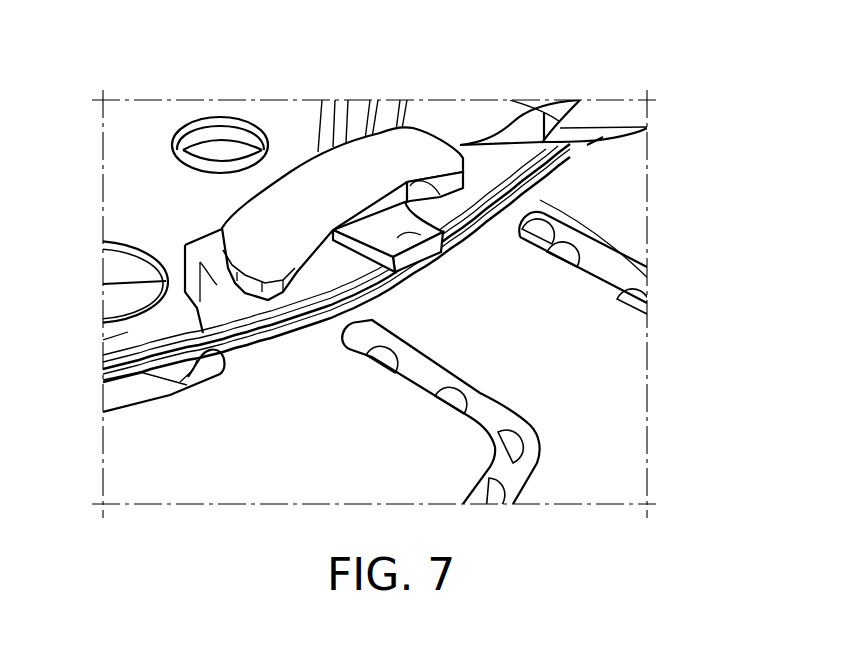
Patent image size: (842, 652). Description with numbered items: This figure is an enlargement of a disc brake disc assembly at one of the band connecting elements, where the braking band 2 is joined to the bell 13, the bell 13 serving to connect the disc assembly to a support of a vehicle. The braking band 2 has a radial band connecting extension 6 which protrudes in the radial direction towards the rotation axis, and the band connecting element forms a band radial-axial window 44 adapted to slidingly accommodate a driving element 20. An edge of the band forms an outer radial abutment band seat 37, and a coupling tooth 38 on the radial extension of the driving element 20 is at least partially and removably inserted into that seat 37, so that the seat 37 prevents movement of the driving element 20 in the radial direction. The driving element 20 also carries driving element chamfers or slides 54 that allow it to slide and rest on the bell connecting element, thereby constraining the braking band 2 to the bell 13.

The braking band 2 is at (582, 412).
The radial band connecting extension 6 is at (184, 264).
The bell 13 is at (177, 203).
The driving element 20 is at (357, 170).
The outer radial abutment band seat 37 is at (520, 175).
The coupling tooth 38 is at (427, 240).
The band radial-axial window 44 is at (352, 256).
The driving element chamfers or slides 54 is at (485, 190).